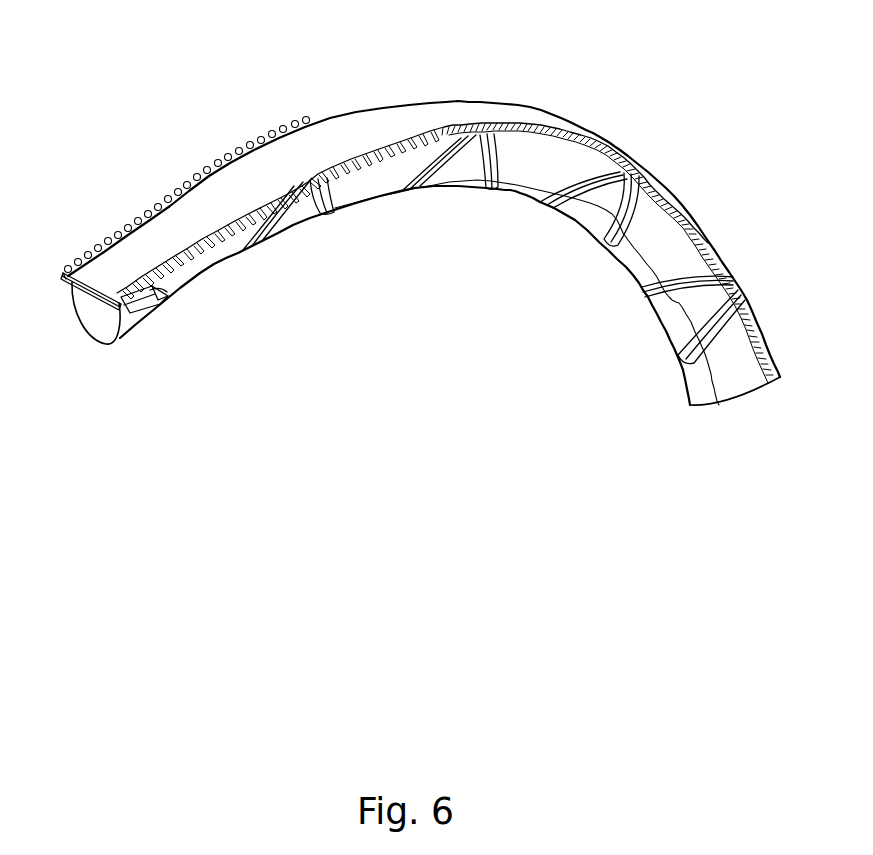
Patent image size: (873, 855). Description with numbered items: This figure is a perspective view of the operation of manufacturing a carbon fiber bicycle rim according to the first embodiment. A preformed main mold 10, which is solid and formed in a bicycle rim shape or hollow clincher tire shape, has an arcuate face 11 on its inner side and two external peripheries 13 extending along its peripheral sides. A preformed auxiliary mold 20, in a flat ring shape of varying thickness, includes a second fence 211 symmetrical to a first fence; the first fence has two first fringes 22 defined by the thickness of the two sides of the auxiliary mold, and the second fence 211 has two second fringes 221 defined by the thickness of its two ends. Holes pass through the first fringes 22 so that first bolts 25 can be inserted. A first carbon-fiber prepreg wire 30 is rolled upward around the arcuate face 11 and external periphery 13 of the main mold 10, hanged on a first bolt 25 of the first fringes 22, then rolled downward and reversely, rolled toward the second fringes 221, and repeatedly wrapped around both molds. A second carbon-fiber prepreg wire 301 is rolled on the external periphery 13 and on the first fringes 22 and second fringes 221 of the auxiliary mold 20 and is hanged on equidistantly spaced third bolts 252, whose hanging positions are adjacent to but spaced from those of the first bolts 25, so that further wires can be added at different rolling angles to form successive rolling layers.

The preformed main mold 10 is at (619, 273).
The arcuate face 11 is at (112, 346).
The external peripheries 13 is at (263, 213).
The preformed auxiliary mold 20 is at (511, 99).
The second fence 211 is at (128, 234).
The first fringes 22 is at (81, 295).
The second fringes 221 is at (66, 276).
The first bolts 25 is at (293, 183).
The third bolts 252 is at (310, 176).
The first carbon-fiber prepreg wire 30 is at (150, 312).
The second carbon-fiber prepreg wire 301 is at (170, 297).